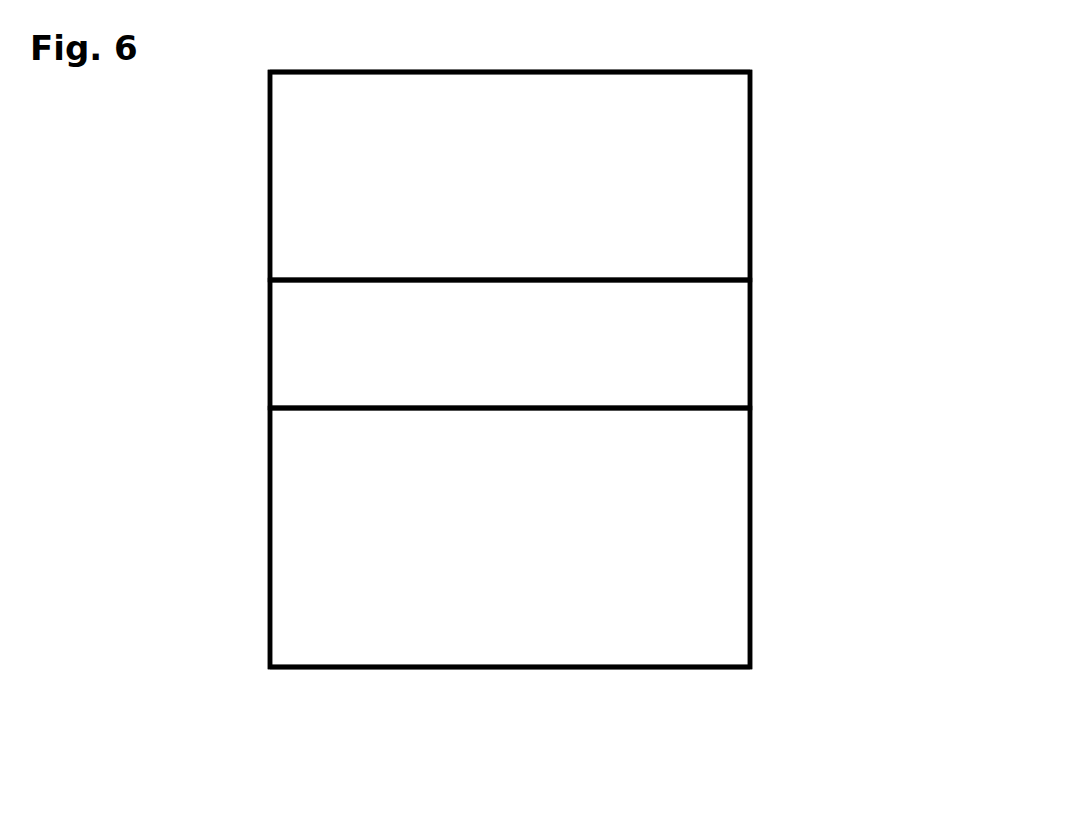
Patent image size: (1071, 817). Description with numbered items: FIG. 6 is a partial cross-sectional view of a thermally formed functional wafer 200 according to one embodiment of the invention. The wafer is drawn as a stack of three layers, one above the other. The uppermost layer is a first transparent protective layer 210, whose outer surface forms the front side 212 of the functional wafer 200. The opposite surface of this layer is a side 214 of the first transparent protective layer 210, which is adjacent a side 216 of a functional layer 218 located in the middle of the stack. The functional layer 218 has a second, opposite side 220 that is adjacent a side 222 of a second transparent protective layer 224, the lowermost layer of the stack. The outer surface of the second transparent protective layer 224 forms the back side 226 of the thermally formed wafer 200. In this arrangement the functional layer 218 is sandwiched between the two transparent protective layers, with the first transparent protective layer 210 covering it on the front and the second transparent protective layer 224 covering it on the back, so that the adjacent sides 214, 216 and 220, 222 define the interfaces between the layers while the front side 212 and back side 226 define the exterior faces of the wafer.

The functional wafer 200 is at (797, 131).
The first transparent protective layer 210 is at (750, 206).
The front side 212 is at (490, 70).
The side of the first transparent protective layer 214 is at (561, 278).
The side of the functional layer 216 is at (512, 282).
The functional layer 218 is at (750, 354).
The side of the functional layer 220 is at (468, 405).
The side of the second transparent protective layer 222 is at (568, 412).
The second transparent protective layer 224 is at (750, 522).
The back side 226 is at (605, 670).